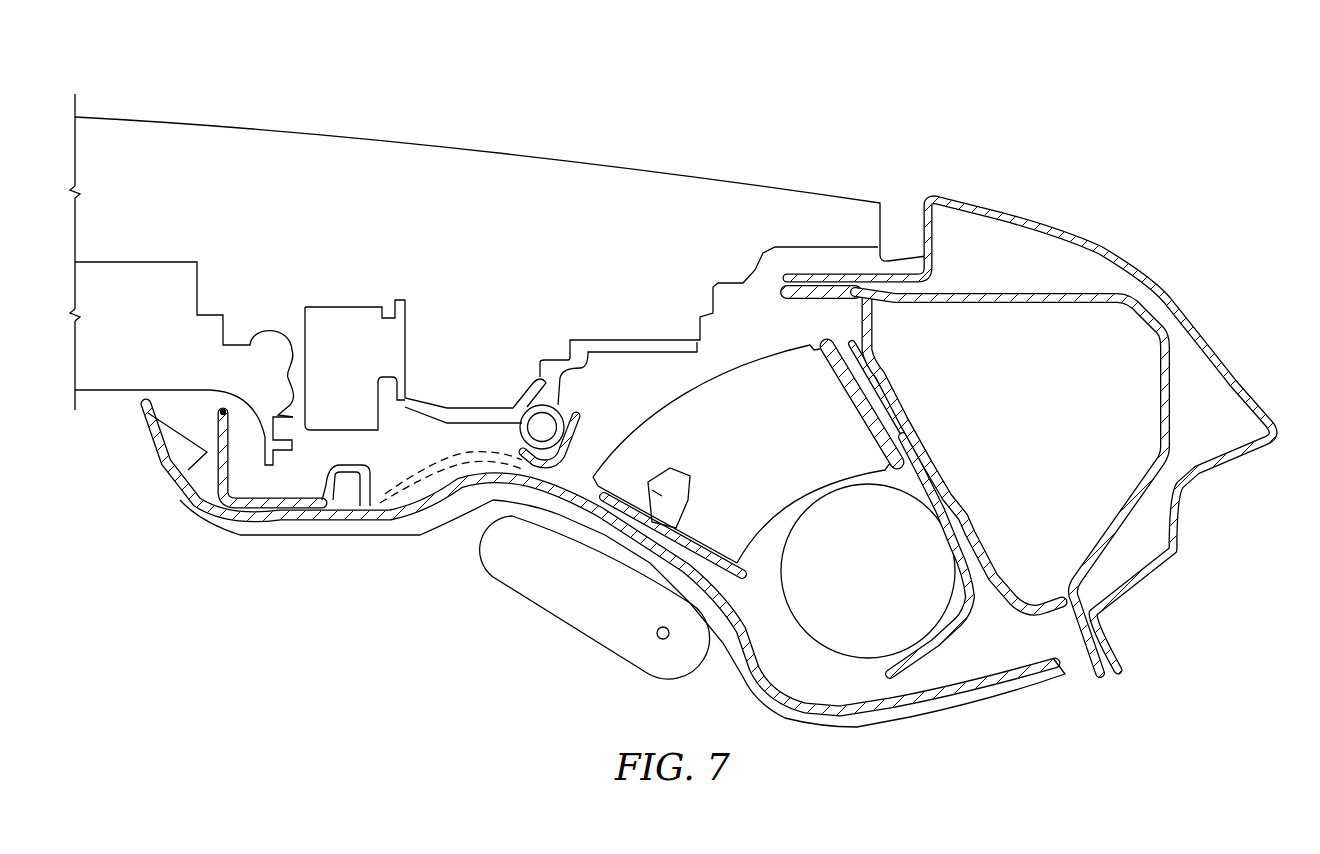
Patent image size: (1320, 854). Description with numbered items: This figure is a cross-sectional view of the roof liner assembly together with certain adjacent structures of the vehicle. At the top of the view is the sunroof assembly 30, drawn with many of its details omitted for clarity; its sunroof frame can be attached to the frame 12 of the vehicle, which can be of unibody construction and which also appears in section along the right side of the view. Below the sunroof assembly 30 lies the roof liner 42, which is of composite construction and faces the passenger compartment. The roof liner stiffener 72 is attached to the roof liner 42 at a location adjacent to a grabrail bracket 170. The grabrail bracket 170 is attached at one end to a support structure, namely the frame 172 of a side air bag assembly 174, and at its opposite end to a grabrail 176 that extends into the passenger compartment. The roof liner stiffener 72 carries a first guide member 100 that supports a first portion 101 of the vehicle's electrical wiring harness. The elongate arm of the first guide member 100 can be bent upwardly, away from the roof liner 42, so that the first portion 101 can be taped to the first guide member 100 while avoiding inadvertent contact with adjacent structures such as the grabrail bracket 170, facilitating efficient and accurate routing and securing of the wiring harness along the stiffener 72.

The sunroof assembly 30 is at (138, 168).
The roof liner 42 is at (330, 520).
The roof liner stiffener 72 is at (203, 418).
The first portion of the electrical wiring harness 101 is at (540, 400).
The first guide member 100 is at (590, 423).
The grabrail bracket 170 is at (742, 360).
The frame of a side air bag assembly 172 is at (933, 470).
The side air bag assembly 174 is at (960, 667).
The grabrail 176 is at (541, 606).
The frame 12 is at (1228, 515).